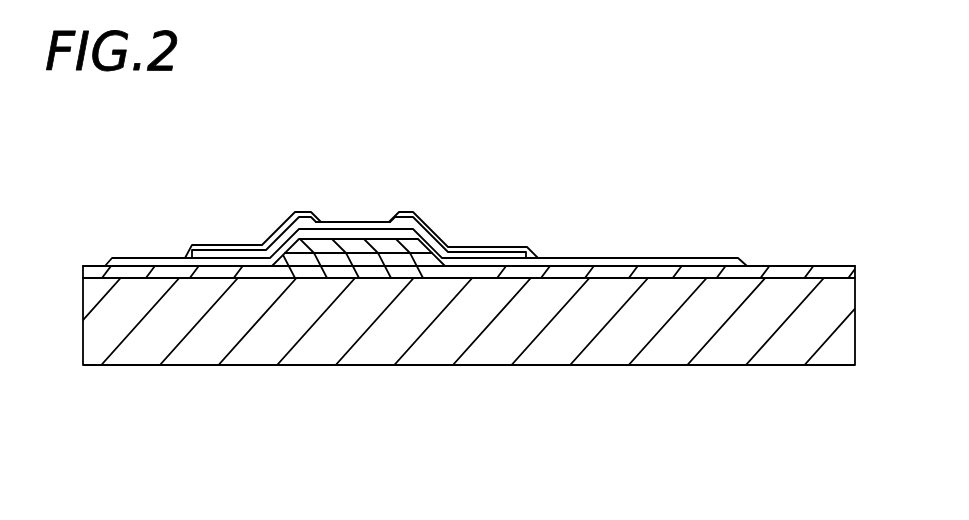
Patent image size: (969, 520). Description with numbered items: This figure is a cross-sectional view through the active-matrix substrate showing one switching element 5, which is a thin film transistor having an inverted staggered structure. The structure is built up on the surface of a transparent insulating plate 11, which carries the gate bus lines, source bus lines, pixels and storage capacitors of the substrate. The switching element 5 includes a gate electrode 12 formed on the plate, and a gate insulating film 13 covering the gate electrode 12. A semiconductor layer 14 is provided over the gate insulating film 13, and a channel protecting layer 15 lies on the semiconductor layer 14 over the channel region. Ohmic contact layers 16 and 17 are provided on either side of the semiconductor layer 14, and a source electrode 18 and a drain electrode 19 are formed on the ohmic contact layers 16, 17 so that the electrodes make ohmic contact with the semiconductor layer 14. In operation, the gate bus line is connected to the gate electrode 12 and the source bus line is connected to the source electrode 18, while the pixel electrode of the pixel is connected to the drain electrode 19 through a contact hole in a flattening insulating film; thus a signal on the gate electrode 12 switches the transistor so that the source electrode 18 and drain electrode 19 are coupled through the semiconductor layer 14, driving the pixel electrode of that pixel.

The switching element 5 is at (401, 190).
The transparent insulating plate 11 is at (552, 346).
The gate electrode 12 is at (335, 268).
The gate insulating film 13 is at (95, 266).
The semiconductor layer 14 is at (335, 229).
The channel protecting layer 15 is at (357, 222).
The ohmic contact layer 16 is at (278, 228).
The ohmic contact layer 17 is at (443, 233).
The source electrode 18 is at (186, 256).
The drain electrode 19 is at (512, 246).